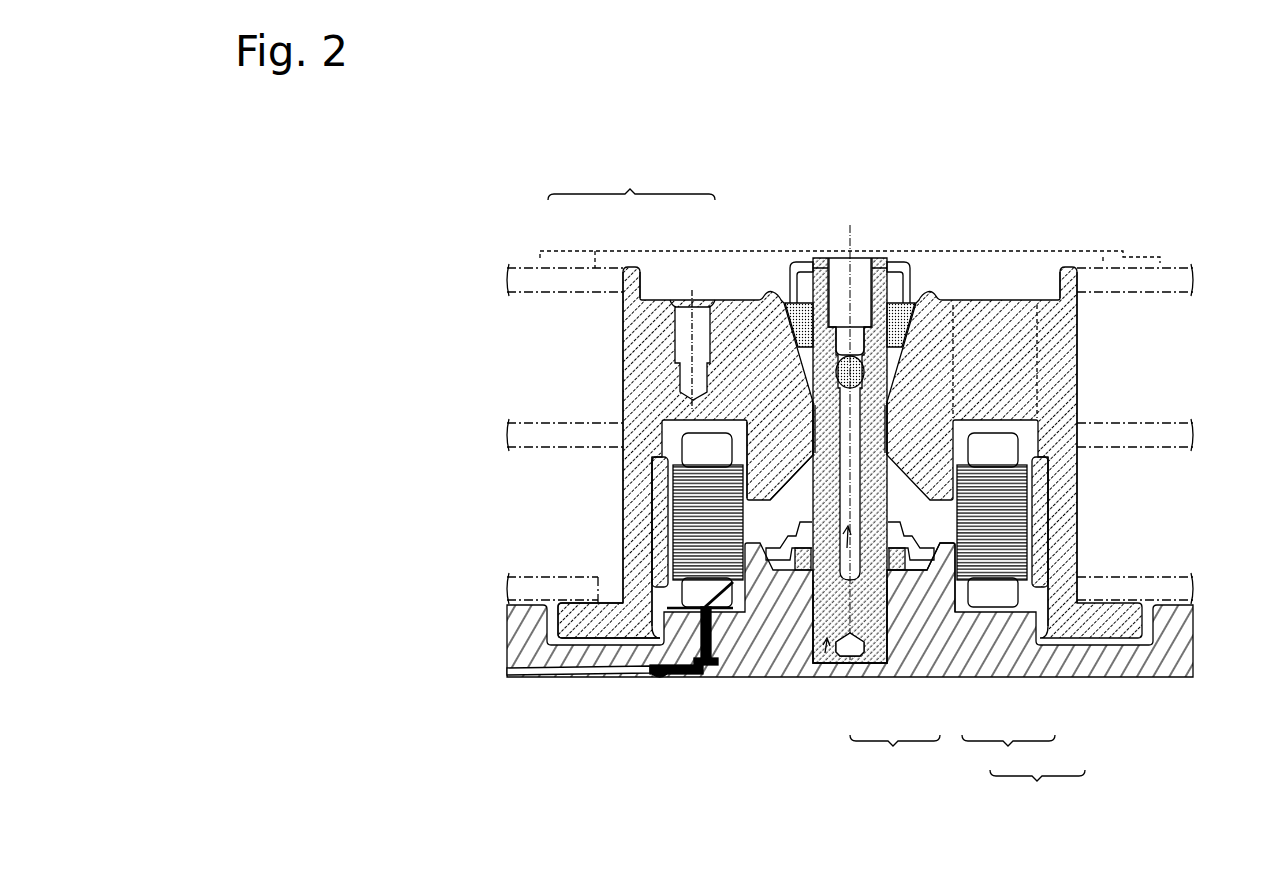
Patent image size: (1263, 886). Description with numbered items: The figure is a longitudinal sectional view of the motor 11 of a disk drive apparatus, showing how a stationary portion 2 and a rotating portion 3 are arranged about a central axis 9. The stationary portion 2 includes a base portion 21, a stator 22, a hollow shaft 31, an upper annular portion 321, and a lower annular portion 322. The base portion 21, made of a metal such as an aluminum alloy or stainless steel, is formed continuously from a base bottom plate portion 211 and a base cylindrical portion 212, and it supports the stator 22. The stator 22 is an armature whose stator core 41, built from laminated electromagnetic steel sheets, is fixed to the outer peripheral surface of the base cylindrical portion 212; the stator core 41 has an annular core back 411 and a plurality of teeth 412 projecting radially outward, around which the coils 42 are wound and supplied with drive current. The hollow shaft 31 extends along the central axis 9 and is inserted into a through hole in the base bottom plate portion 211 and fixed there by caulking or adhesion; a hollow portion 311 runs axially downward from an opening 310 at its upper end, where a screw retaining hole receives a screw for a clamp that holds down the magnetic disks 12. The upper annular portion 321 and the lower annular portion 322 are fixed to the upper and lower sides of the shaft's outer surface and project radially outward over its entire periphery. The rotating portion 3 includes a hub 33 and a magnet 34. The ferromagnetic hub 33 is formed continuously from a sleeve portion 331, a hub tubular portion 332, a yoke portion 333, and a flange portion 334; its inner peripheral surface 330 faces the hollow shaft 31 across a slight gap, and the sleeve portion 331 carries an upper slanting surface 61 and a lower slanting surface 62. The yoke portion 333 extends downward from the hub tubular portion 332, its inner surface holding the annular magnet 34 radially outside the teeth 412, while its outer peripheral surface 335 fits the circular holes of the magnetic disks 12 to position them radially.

The stationary portion 2 is at (615, 684).
The rotating portion 3 is at (996, 283).
The central axis 9 is at (854, 249).
The motor 11 is at (1050, 240).
The magnetic disk 12 is at (1178, 280).
The base portion 21 is at (884, 655).
The base bottom plate portion 211 is at (880, 667).
The base cylindrical portion 212 is at (922, 677).
The stator 22 is at (879, 619).
The hollow shaft 31 is at (879, 483).
The opening 310 is at (858, 265).
The hollow portion 311 is at (803, 572).
The upper annular portion 321 is at (910, 277).
The lower annular portion 322 is at (770, 562).
The hub 33 is at (680, 402).
The inner peripheral surface 330 is at (810, 420).
The sleeve portion 331 is at (788, 463).
The hub tubular portion 332 is at (713, 345).
The yoke portion 333 is at (637, 628).
The flange portion 334 is at (600, 597).
The outer peripheral surface 335 is at (1073, 560).
The magnet 34 is at (565, 672).
The stator core 41 is at (868, 600).
The core back 411 is at (957, 545).
The teeth 412 is at (1007, 602).
The coils 42 is at (995, 580).
The upper slanting surface 61 is at (887, 343).
The lower slanting surface 62 is at (663, 677).